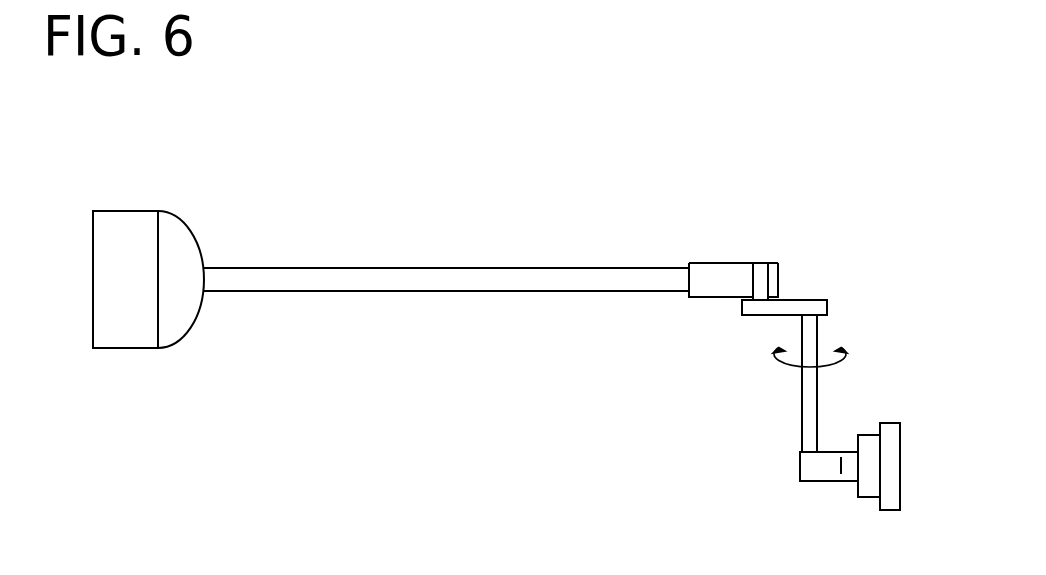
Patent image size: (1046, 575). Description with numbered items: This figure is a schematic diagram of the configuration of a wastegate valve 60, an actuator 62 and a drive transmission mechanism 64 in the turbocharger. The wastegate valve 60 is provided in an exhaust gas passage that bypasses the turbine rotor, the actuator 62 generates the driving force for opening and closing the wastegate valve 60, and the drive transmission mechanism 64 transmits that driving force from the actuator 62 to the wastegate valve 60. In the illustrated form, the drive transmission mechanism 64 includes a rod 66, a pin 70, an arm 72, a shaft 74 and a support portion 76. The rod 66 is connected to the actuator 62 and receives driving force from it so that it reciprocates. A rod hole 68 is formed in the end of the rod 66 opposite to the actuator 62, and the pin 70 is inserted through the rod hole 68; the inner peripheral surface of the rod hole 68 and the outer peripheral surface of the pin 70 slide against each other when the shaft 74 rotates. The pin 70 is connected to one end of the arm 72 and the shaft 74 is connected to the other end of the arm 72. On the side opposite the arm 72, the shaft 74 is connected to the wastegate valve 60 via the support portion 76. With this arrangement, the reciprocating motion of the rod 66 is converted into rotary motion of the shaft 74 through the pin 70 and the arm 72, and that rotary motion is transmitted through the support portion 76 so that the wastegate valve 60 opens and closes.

The wastegate valve 60 is at (900, 476).
The actuator 62 is at (134, 211).
The drive transmission mechanism 64 is at (851, 250).
The rod 66 is at (437, 268).
The rod hole 68 is at (754, 288).
The pin 70 is at (765, 263).
The arm 72 is at (797, 300).
The shaft 74 is at (817, 391).
The support portion 76 is at (818, 481).